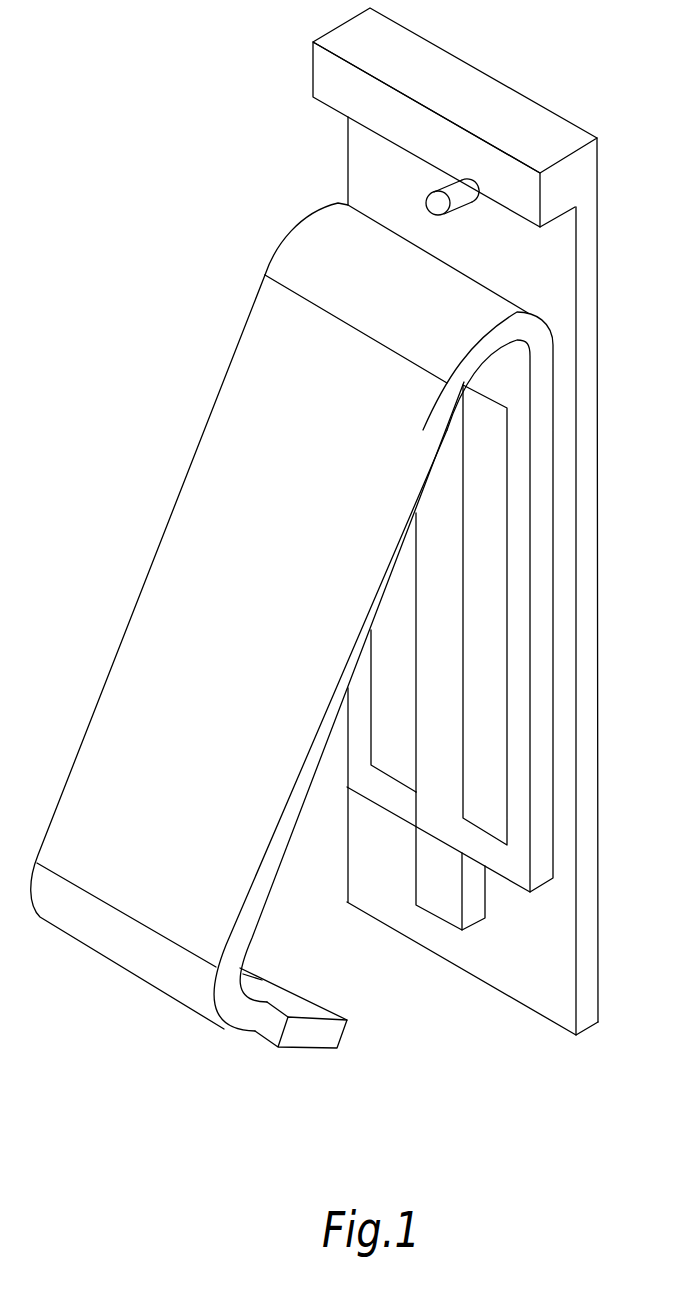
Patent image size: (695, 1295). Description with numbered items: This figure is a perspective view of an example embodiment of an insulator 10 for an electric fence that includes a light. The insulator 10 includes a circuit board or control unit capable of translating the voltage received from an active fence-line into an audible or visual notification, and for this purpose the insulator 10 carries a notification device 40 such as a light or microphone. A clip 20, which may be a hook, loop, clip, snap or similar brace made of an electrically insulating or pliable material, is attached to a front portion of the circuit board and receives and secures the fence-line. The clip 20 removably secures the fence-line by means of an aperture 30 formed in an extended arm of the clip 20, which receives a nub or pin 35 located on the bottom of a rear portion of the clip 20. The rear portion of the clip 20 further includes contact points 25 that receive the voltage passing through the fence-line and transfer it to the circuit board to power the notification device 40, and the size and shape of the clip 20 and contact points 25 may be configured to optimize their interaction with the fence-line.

The insulator 10 is at (160, 175).
The clip 20 is at (222, 482).
The contact points 25 is at (482, 467).
The aperture 30 is at (242, 970).
The nub or pin 35 is at (437, 871).
The notification device 40 is at (438, 193).